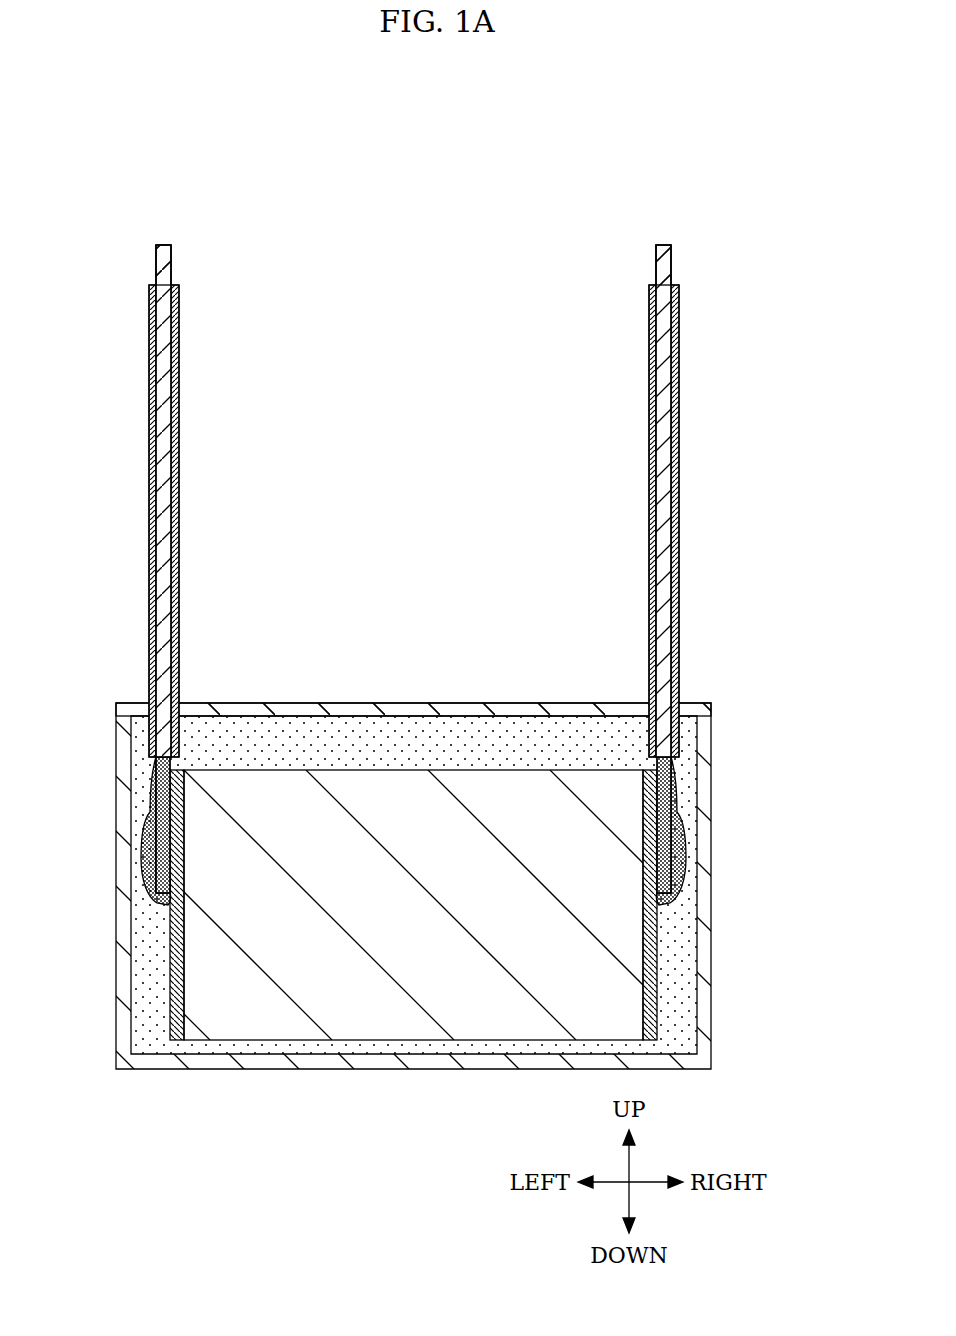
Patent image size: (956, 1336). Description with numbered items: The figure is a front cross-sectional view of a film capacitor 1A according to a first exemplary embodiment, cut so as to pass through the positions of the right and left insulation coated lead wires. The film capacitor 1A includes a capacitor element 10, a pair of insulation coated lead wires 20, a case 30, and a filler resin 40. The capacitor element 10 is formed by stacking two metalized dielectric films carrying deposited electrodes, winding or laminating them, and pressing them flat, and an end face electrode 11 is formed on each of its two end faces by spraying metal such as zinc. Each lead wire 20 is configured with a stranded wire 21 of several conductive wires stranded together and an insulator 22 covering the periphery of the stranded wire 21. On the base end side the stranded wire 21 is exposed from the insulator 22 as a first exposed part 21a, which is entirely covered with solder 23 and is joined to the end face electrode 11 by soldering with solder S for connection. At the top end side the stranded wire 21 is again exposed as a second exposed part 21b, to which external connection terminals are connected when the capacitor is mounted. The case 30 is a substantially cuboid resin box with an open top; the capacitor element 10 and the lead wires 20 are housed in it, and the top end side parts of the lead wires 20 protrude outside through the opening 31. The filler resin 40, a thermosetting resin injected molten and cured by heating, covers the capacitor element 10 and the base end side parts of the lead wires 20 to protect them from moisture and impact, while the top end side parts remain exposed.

The film capacitor 1A is at (705, 672).
The capacitor element 10 is at (387, 762).
The end face electrode 11 is at (172, 975).
The insulation coated lead wire 20 is at (183, 483).
The stranded wire 21 is at (165, 545).
The first exposed part 21a is at (152, 805).
The second exposed part 21b is at (172, 265).
The insulator 22 is at (178, 385).
The solder 23 is at (152, 762).
The case 30 is at (712, 885).
The opening 31 is at (293, 703).
The filler resin 40 is at (499, 740).
The solder for connection S is at (152, 887).